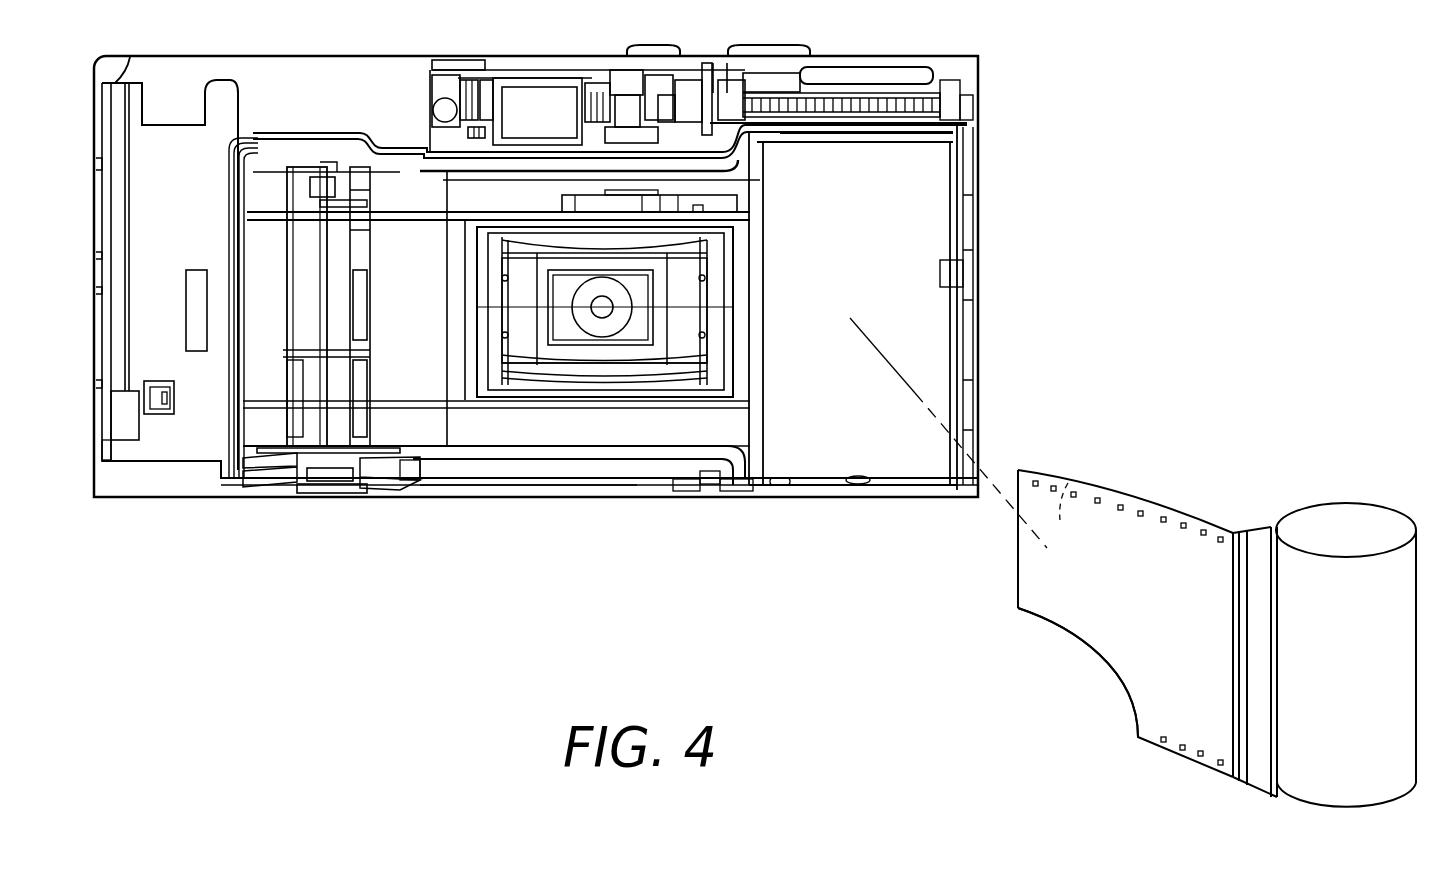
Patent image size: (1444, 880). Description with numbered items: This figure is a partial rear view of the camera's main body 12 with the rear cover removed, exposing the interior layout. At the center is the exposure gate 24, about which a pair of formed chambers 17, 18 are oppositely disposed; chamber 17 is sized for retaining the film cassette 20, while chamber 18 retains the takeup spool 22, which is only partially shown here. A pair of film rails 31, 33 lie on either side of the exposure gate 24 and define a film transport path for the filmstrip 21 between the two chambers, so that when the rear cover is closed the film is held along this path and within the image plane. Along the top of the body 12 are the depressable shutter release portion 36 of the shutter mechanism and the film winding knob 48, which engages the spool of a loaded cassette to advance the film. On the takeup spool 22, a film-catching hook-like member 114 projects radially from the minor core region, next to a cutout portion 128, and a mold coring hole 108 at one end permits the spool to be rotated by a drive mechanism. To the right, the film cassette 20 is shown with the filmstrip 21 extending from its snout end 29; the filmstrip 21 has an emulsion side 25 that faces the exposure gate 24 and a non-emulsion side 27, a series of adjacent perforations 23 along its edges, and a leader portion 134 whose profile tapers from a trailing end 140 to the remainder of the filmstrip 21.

The main body 12 is at (536, 276).
The formed chamber 17 is at (813, 450).
The formed chamber 18 is at (413, 314).
The film cassette 20 is at (1323, 513).
The filmstrip 21 is at (1173, 510).
The takeup spool 22 is at (290, 472).
The edge perforations 23 is at (1163, 737).
The exposure gate 24 is at (542, 357).
The emulsion side 25 is at (1067, 483).
The non-emulsion side 27 is at (1038, 585).
The snout end 29 is at (1260, 530).
The film rail 31 is at (413, 217).
The film rail 33 is at (410, 401).
The shutter release portion 36 is at (742, 47).
The film winding knob 48 is at (877, 68).
The mold coring hole 108 is at (332, 488).
The film-catching hook-like member 114 is at (317, 187).
The cutout portion 128 is at (297, 230).
The leader portion 134 is at (1100, 623).
The trailing end 140 is at (1028, 548).